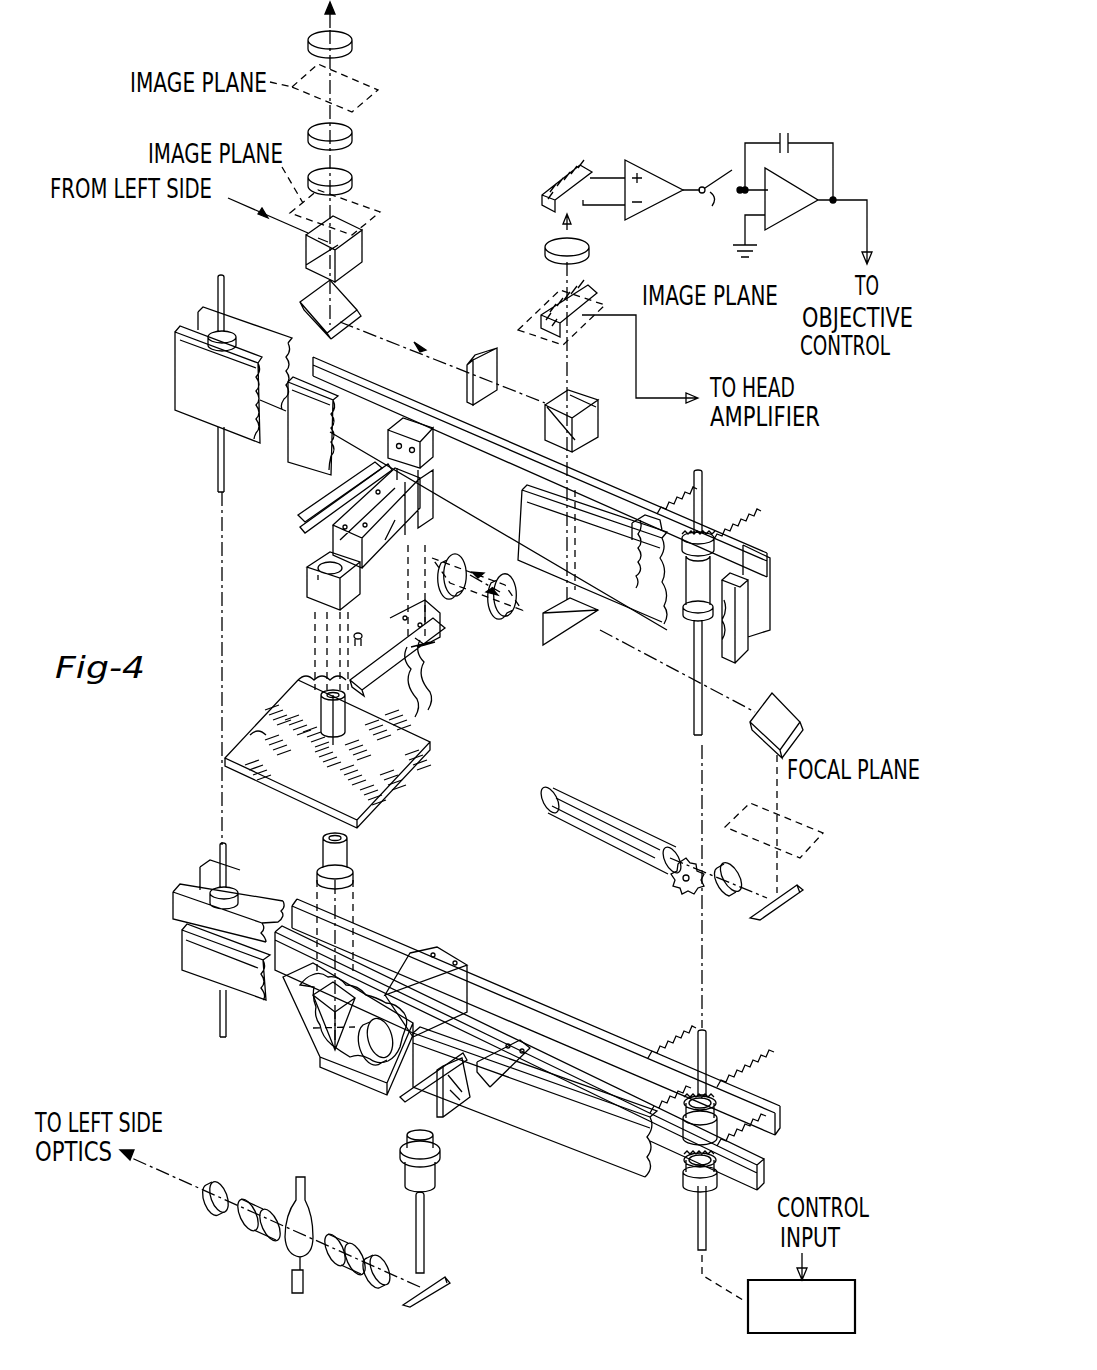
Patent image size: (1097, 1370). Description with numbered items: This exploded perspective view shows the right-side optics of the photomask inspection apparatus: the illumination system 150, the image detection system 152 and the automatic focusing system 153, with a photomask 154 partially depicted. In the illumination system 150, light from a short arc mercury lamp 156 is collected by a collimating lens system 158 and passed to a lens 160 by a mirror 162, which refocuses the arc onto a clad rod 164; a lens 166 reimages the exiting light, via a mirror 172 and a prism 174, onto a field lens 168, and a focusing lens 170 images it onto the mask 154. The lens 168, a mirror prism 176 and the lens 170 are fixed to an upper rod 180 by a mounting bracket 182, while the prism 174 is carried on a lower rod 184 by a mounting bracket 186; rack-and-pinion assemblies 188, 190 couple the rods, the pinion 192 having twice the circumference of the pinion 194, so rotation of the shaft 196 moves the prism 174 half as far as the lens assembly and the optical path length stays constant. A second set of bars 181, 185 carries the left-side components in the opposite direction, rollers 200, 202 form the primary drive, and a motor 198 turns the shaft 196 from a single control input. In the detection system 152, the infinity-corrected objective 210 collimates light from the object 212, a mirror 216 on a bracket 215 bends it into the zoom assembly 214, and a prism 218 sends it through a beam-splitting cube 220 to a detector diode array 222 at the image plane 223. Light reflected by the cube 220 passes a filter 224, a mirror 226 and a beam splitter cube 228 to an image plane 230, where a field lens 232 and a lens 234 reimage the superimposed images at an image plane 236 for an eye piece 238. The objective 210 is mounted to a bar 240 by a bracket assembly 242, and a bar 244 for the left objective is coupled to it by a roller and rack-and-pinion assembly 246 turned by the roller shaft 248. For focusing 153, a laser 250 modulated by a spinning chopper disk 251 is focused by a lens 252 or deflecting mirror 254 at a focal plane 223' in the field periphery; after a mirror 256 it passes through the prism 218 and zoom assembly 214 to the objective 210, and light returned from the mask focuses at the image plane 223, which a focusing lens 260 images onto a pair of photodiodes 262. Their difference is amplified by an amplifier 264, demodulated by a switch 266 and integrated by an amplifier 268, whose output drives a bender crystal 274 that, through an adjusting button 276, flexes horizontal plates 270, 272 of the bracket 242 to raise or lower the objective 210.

The illumination system 150 is at (375, 1136).
The image detection and autofocus system 152 is at (518, 668).
The automatic focusing system 153 is at (636, 795).
The photomask 154 is at (395, 786).
The short arc mercury lamp 156 is at (307, 1212).
The collimating lens system 158 is at (360, 1242).
The lens 160 is at (378, 1288).
The mirror 162 is at (440, 1298).
The clad rod 164 is at (427, 1233).
The lens 166 is at (438, 1175).
The lens 168 is at (363, 1056).
The focusing lens 170 is at (355, 858).
The mirror 172 is at (408, 1100).
The prism 174 is at (452, 1113).
The mirror prism 176 is at (310, 1043).
The upper rod 180 is at (523, 1003).
The bar 181 is at (170, 900).
The mounting bracket 182 is at (427, 977).
The lower rod 184 is at (570, 1077).
The bar 185 is at (180, 952).
The mounting bracket 186 is at (500, 1105).
The rack-and-pinion assembly 188 is at (775, 1070).
The gear drive 190 is at (713, 1190).
The pinion 192 is at (686, 1090).
The pinion 194 is at (690, 1160).
The shaft 196 is at (710, 1052).
The motor 198 is at (747, 1280).
The roller 200 is at (752, 1105).
The roller 202 is at (693, 1190).
The objective 210 is at (323, 702).
The object 212 is at (312, 798).
The vari-focal lens assembly 214 is at (497, 565).
The bracket 215 is at (388, 448).
The mirror 216 is at (345, 525).
The prism 218 is at (548, 645).
The beam-splitting cube 220 is at (592, 430).
The detector diode array 222 is at (556, 303).
The image plane 223 is at (583, 302).
The focal plane 223' is at (788, 823).
The filter 224 is at (480, 360).
The mirror 226 is at (344, 296).
The beam splitter cube 228 is at (364, 249).
The image plane 230 is at (377, 213).
The field lens 232 is at (360, 173).
The lens 234 is at (360, 132).
The image plane 236 is at (375, 88).
The eye piece 238 is at (358, 38).
The bar 240 is at (505, 483).
The bracket assembly 242 is at (308, 594).
The bar 244 is at (640, 588).
The roller and rack-and-pinion assembly 246 is at (707, 570).
The roller shaft 248 is at (705, 505).
The laser 250 is at (610, 846).
The spinning chopper disk 251 is at (680, 893).
The lens 252 is at (733, 893).
The deflecting mirror 254 is at (773, 908).
The mirror 256 is at (782, 708).
The focusing lens 260 is at (548, 252).
The photodiodes 262 is at (553, 184).
The amplifier 264 is at (673, 182).
The switch 266 is at (722, 202).
The amplifier 268 is at (795, 212).
The horizontal plate 270 is at (385, 472).
The horizontal plate 272 is at (413, 545).
The bender crystal 274 is at (422, 650).
The adjusting button 276 is at (352, 640).